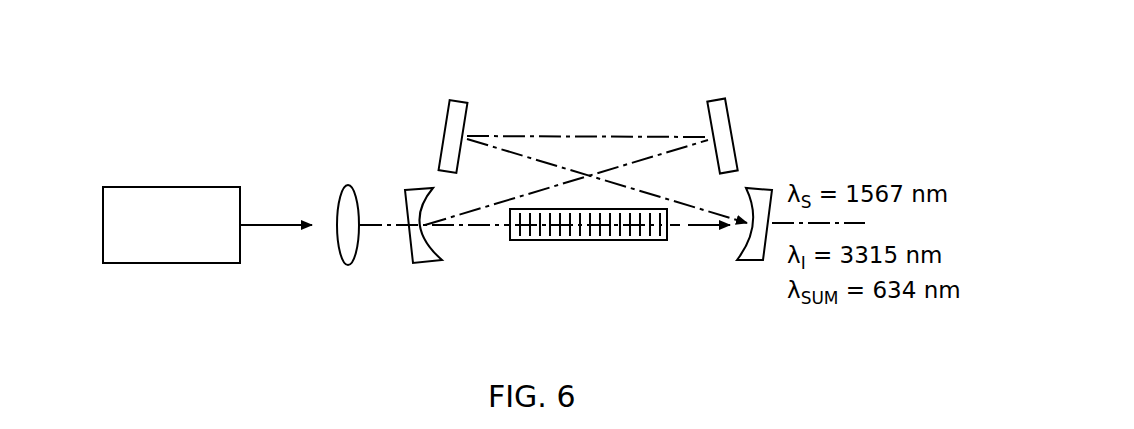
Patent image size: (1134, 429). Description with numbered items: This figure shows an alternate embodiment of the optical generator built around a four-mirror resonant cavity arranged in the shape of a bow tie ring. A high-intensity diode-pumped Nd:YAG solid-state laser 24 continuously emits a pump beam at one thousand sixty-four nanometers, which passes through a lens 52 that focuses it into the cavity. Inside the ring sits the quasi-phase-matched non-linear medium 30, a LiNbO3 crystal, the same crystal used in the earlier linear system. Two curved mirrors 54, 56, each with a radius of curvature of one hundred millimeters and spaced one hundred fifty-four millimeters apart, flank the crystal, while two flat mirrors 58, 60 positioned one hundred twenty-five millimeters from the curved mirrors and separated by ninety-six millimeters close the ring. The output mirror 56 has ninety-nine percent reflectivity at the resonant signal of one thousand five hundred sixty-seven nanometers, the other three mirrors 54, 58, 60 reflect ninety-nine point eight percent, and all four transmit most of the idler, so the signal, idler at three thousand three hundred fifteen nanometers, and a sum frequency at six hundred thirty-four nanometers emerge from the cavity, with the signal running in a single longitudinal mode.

The Nd:YAG solid-state laser 24 is at (175, 187).
The focusing lens 52 is at (343, 195).
The curved mirror 54 is at (412, 190).
The output mirror 56 is at (764, 188).
The flat mirror 58 is at (725, 113).
The flat mirror 60 is at (452, 113).
The quasi-phase-matched non-linear medium 30 is at (508, 227).